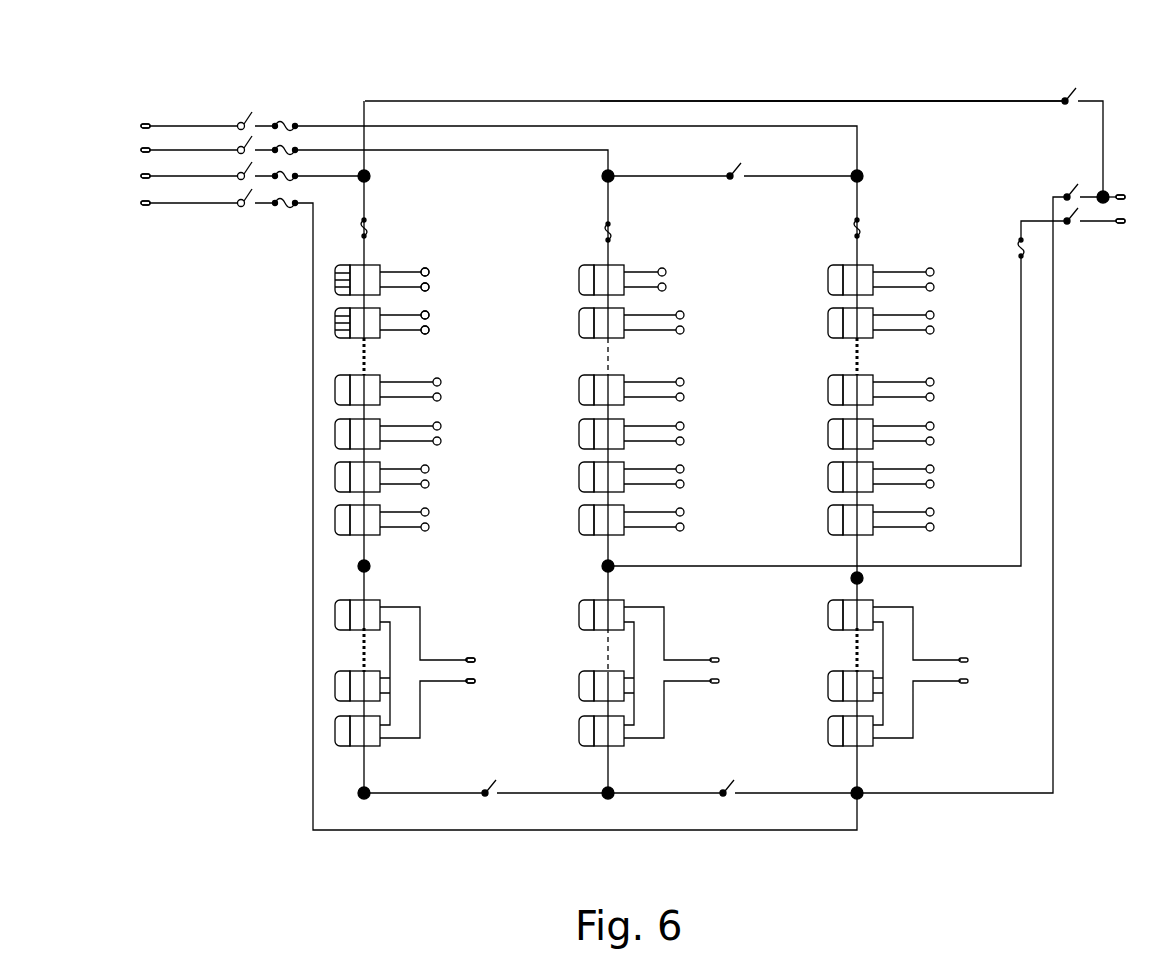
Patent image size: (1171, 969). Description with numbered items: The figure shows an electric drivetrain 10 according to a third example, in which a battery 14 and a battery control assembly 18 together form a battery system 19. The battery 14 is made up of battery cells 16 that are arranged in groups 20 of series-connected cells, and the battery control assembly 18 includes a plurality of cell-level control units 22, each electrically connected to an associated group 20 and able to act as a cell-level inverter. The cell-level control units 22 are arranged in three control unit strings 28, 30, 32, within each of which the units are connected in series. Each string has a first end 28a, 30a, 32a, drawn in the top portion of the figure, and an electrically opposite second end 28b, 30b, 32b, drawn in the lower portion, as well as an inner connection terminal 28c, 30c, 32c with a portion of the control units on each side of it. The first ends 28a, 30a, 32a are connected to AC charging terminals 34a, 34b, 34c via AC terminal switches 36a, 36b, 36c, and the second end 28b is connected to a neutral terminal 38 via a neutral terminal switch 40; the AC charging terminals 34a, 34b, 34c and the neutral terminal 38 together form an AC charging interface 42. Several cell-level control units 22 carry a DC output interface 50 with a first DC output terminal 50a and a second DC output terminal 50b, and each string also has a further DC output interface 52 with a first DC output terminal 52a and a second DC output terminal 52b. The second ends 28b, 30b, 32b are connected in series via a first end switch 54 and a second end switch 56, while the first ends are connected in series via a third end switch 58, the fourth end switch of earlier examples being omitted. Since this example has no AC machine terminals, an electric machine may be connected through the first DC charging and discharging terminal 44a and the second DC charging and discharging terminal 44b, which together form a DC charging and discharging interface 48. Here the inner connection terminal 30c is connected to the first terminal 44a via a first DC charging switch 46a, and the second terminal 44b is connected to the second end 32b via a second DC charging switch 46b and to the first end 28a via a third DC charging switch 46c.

The electric drivetrain 10 is at (952, 88).
The battery 14 is at (822, 88).
The battery cell 16 is at (336, 273).
The battery control assembly 18 is at (757, 88).
The battery system 19 is at (682, 88).
The group of battery cells 20 is at (331, 298).
The cell-level control unit 22 is at (610, 506).
The control unit string 28 is at (381, 190).
The first end 28a is at (363, 172).
The second end 28b is at (362, 793).
The inner connection terminal 28c is at (366, 566).
The control unit string 30 is at (583, 212).
The first end 30a is at (608, 172).
The second end 30b is at (610, 792).
The inner connection terminal 30c is at (606, 566).
The control unit string 32 is at (887, 212).
The first end 32a is at (858, 172).
The second end 32b is at (860, 795).
The inner connection terminal 32c is at (855, 578).
The AC charging terminal 34a is at (231, 177).
The AC charging terminal 34b is at (353, 157).
The AC charging terminal 34c is at (477, 145).
The AC terminal switch 36a is at (233, 186).
The AC terminal switch 36b is at (233, 158).
The AC terminal switch 36c is at (258, 100).
The neutral terminal 38 is at (480, 511).
The neutral terminal switch 40 is at (251, 213).
The AC charging interface 42 is at (120, 104).
The first DC charging and discharging terminal 44a is at (1142, 222).
The second DC charging and discharging terminal 44b is at (1132, 198).
The first DC charging switch 46a is at (1072, 235).
The second DC charging switch 46b is at (1088, 182).
The third DC charging switch 46c is at (1093, 86).
The DC charging and discharging interface 48 is at (1144, 242).
The DC output interface 50 is at (437, 274).
The first DC output terminal 50a is at (424, 267).
The second DC output terminal 50b is at (429, 287).
The further DC output interface 52 is at (480, 667).
The first DC output terminal 52a is at (468, 657).
The second DC output terminal 52b is at (470, 685).
The first end switch 54 is at (487, 802).
The second end switch 56 is at (726, 802).
The third end switch 58 is at (730, 187).